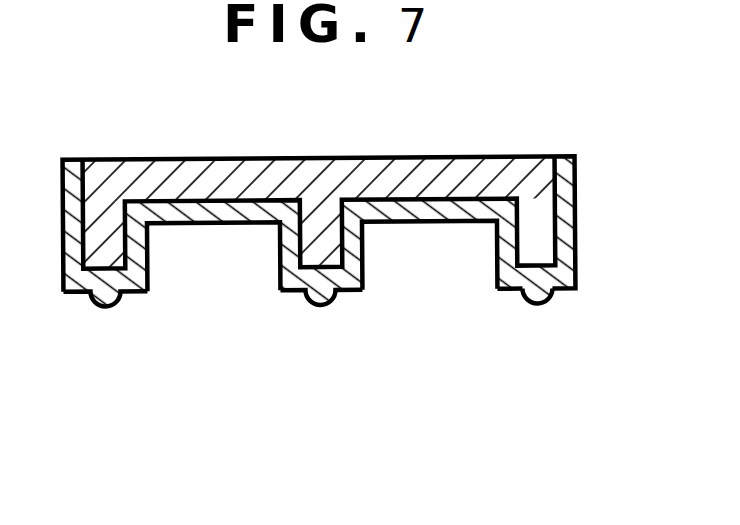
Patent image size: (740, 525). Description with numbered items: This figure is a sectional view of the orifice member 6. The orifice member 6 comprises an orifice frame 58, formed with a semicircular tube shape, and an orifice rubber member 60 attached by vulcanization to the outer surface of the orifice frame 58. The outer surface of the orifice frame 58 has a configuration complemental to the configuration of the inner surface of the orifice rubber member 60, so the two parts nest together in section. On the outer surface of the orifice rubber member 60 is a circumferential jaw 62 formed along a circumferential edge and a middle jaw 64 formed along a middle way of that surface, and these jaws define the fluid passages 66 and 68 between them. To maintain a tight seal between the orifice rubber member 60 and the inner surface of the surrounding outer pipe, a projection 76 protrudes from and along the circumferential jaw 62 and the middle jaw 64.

The orifice member 6 is at (160, 136).
The orifice frame 58 is at (353, 157).
The orifice rubber member 60 is at (131, 310).
The circumferential jaw 62 is at (333, 240).
The middle jaw 64 is at (97, 232).
The fluid passage 66 is at (212, 245).
The fluid passage 68 is at (450, 237).
The projection 76 is at (552, 293).